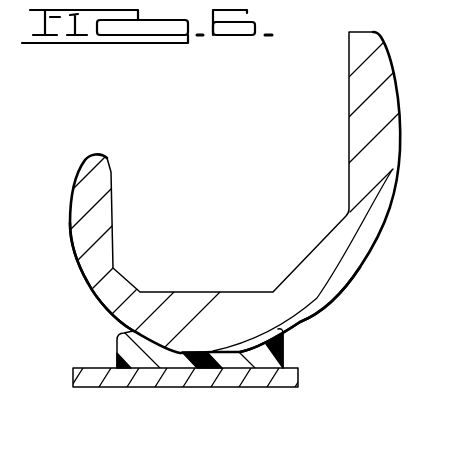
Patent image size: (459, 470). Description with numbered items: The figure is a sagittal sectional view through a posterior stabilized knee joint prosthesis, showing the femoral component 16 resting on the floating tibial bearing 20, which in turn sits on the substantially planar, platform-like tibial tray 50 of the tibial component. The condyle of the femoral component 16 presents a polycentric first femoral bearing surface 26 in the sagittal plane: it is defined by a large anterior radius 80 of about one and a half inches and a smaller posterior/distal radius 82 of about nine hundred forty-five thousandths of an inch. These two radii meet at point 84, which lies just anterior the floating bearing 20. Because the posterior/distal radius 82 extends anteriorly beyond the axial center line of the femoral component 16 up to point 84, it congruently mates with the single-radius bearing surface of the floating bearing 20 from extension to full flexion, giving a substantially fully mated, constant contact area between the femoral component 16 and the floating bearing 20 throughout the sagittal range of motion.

The femoral component 16 is at (363, 219).
The floating tibial bearing 20 is at (117, 345).
The first femoral bearing surface 26 is at (205, 347).
The tibial tray 50 is at (92, 386).
The large anterior radius 80 is at (341, 288).
The posterior/distal radius 82 is at (100, 305).
The point 84 is at (302, 289).